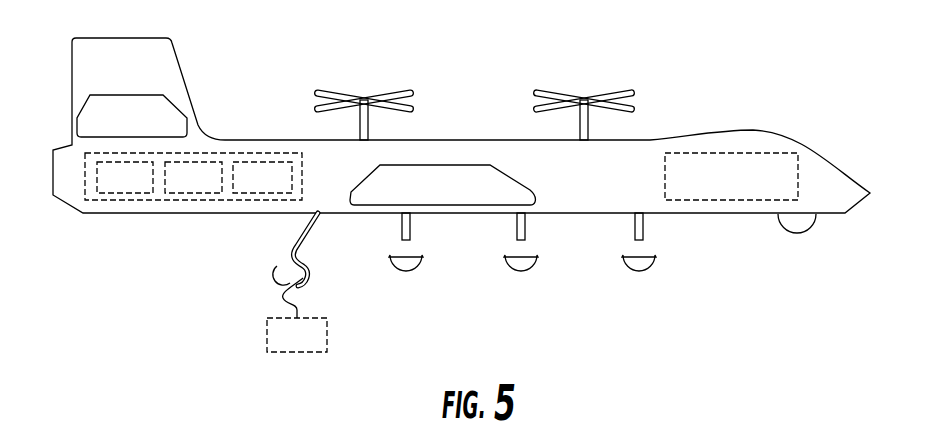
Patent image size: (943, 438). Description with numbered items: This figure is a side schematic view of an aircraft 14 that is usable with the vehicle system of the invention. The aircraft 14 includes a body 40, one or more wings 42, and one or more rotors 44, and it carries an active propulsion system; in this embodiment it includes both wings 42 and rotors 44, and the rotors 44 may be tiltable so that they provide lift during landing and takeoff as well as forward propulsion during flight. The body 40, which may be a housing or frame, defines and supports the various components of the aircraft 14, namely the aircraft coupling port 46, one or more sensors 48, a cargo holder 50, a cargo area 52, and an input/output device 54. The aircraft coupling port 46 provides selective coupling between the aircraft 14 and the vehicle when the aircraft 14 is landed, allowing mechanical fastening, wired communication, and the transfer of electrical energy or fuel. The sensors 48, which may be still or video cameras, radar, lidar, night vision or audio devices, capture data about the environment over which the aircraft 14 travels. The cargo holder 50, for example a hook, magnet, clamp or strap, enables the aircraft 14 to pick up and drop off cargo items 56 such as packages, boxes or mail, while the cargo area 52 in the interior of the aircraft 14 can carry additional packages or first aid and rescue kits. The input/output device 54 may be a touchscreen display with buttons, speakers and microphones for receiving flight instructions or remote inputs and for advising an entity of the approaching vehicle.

The aircraft 14 is at (786, 92).
The body 40 is at (412, 157).
The wings 42 is at (116, 95).
The rotors 44 is at (378, 95).
The aircraft coupling port 46 is at (798, 234).
The sensors 48 is at (412, 258).
The cargo holder 50 is at (305, 254).
The cargo area 52 is at (228, 153).
The input/output device 54 is at (800, 172).
The cargo items 56 is at (123, 193).